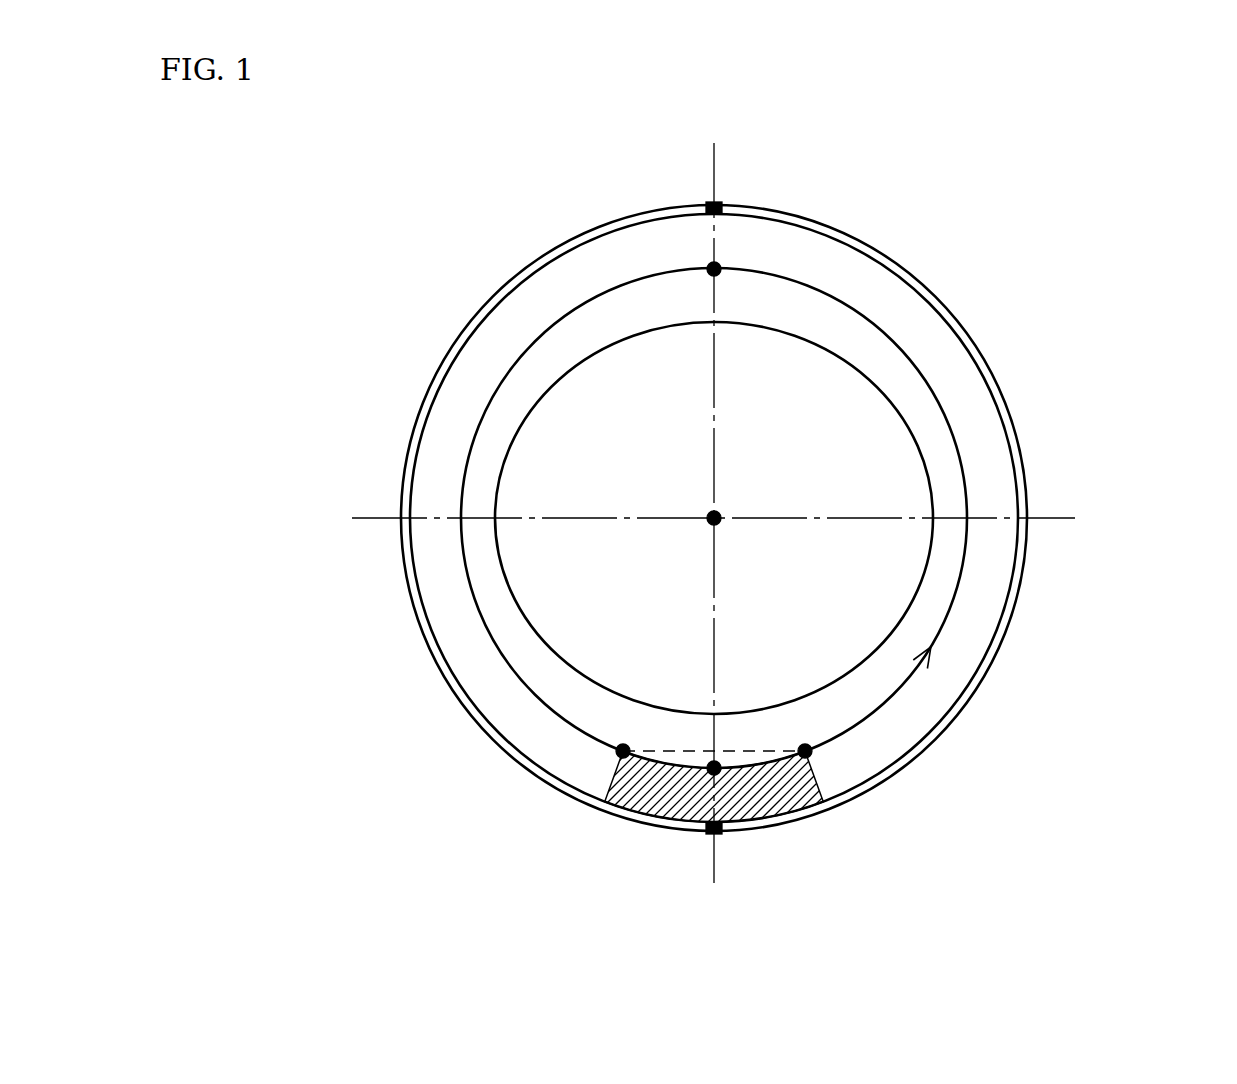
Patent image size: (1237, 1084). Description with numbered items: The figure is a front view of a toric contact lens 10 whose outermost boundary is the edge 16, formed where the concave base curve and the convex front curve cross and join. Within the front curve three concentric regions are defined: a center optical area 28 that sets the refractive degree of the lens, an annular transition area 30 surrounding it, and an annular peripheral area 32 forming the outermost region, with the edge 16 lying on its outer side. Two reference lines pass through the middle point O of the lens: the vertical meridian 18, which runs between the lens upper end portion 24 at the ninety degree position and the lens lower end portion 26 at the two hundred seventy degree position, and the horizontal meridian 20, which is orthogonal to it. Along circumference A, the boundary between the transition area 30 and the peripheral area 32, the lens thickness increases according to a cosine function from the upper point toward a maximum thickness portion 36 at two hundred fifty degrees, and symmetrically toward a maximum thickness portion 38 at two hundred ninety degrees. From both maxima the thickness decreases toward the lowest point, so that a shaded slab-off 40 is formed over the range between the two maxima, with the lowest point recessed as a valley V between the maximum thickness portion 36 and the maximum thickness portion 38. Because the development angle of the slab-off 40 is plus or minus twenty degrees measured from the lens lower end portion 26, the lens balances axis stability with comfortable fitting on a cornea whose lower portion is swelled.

The toric contact lens 10 is at (441, 245).
The edge 16 is at (1005, 627).
The vertical meridian 18 is at (716, 435).
The horizontal meridian 20 is at (866, 514).
The lens upper end portion 24 is at (714, 208).
The lens lower end portion 26 is at (722, 832).
The center optical area 28 is at (568, 576).
The transition area 30 is at (827, 320).
The peripheral area 32 is at (980, 452).
The maximum thickness portion 36 is at (618, 752).
The maximum thickness portion 38 is at (808, 748).
The slab-off 40 is at (824, 789).